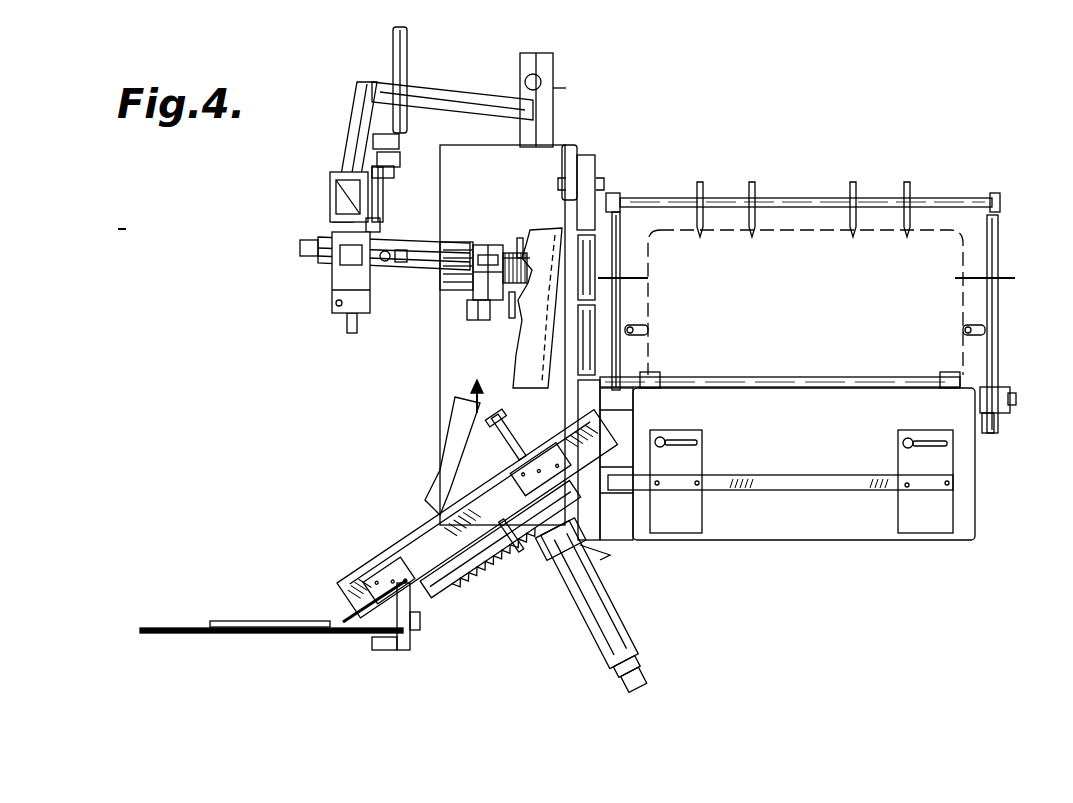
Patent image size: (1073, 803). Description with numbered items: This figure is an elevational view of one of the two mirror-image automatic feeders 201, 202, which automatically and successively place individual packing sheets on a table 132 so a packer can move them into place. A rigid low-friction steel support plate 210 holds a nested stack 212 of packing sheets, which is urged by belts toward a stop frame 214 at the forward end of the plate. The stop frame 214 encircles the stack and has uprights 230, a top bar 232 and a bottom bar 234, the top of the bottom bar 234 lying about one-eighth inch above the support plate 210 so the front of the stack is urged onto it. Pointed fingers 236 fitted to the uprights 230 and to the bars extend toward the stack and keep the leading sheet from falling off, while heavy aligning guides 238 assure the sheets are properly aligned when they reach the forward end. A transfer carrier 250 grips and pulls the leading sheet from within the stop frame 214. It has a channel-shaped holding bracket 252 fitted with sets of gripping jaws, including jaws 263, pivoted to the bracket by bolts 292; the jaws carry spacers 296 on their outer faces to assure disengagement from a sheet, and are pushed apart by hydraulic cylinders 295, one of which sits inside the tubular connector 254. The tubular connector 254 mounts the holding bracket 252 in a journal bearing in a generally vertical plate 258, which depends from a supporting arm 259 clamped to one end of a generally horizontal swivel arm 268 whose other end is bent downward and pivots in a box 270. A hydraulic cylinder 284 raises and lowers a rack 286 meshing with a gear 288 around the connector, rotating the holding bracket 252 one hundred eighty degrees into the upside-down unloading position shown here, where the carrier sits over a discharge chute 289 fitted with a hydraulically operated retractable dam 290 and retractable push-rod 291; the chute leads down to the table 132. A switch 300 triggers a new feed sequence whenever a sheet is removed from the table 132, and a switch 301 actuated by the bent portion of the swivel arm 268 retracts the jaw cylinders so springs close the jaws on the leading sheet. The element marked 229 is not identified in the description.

The table 132 is at (197, 625).
The automatic feeder 201 is at (359, 184).
The automatic feeder 202 is at (834, 552).
The support plate 210 is at (872, 387).
The stack of packing sheets 212 is at (942, 223).
The stop frame 214 is at (808, 198).
The plate 229 is at (240, 623).
The uprights 230 is at (617, 243).
The top bar 232 is at (670, 198).
The bottom bar 234 is at (645, 278).
The fingers 236 is at (913, 207).
The aligning guides 238 is at (645, 330).
The transfer carrier 250 is at (385, 294).
The holding bracket 252 is at (467, 246).
The tubular connector 254 is at (398, 248).
The plate 258 is at (358, 108).
The supporting arm 259 is at (465, 105).
The gripping jaws 263 is at (500, 320).
The swivel arm 268 is at (541, 80).
The box 270 is at (545, 160).
The hydraulic cylinder 284 is at (393, 65).
The rack 286 is at (383, 172).
The gear 288 is at (378, 222).
The discharge chute 289 is at (458, 578).
The retractable dam 290 is at (477, 499).
The retractable push-rod 291 is at (506, 426).
The bolts 292 is at (505, 248).
The hydraulic cylinders 295 is at (384, 281).
The spacers 296 is at (538, 242).
The switch 300 is at (383, 647).
The switch 301 is at (603, 215).